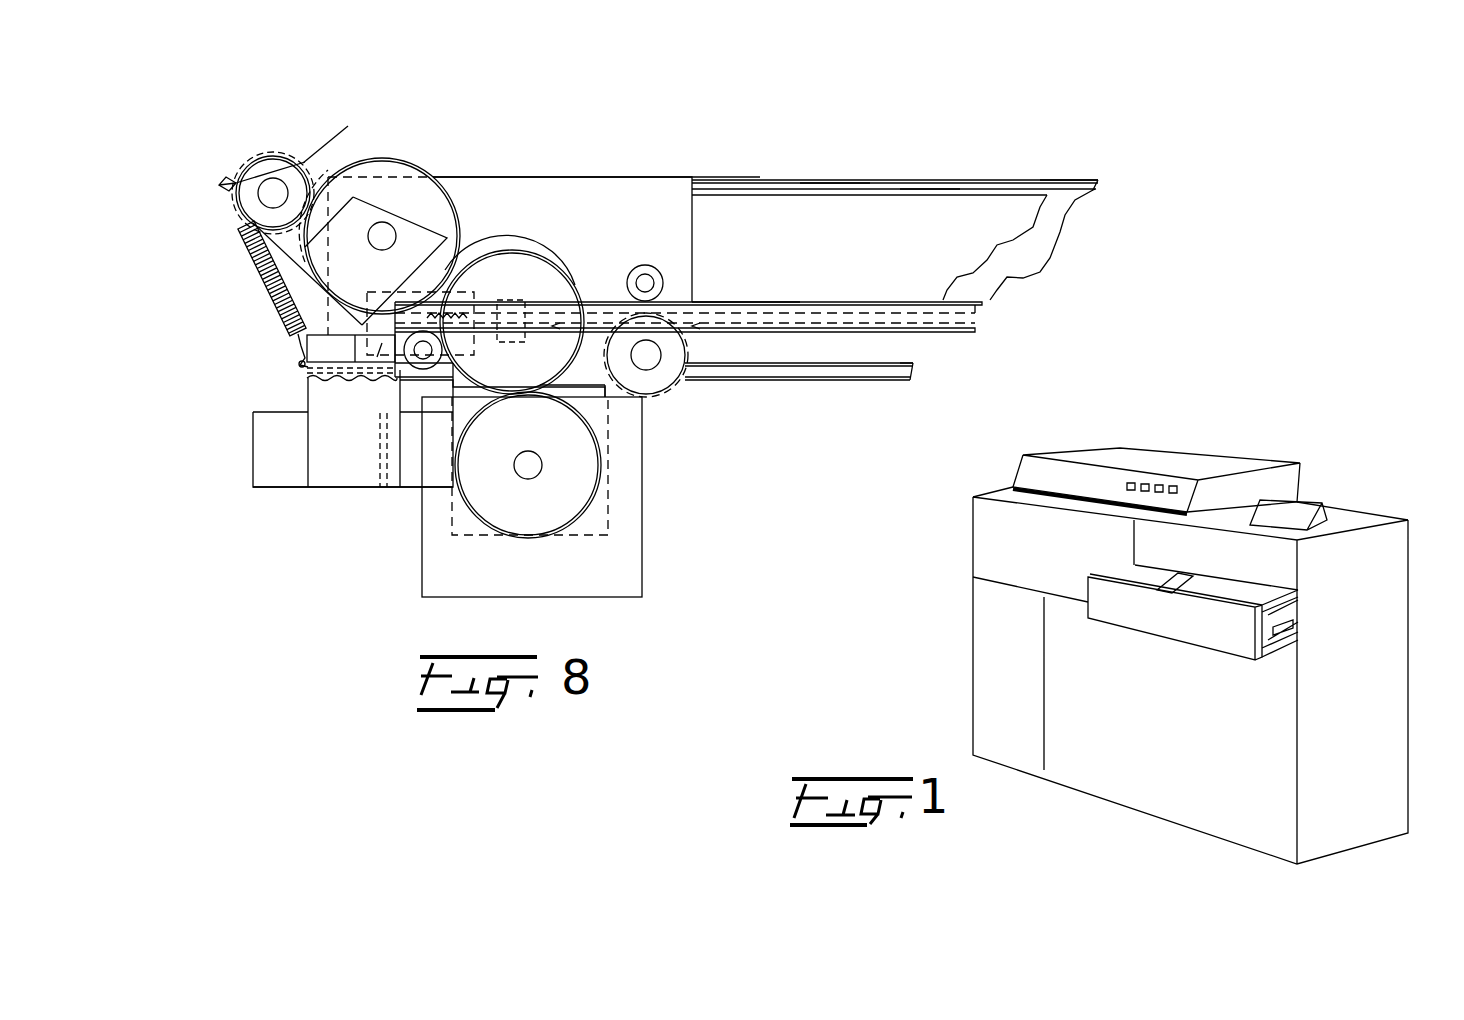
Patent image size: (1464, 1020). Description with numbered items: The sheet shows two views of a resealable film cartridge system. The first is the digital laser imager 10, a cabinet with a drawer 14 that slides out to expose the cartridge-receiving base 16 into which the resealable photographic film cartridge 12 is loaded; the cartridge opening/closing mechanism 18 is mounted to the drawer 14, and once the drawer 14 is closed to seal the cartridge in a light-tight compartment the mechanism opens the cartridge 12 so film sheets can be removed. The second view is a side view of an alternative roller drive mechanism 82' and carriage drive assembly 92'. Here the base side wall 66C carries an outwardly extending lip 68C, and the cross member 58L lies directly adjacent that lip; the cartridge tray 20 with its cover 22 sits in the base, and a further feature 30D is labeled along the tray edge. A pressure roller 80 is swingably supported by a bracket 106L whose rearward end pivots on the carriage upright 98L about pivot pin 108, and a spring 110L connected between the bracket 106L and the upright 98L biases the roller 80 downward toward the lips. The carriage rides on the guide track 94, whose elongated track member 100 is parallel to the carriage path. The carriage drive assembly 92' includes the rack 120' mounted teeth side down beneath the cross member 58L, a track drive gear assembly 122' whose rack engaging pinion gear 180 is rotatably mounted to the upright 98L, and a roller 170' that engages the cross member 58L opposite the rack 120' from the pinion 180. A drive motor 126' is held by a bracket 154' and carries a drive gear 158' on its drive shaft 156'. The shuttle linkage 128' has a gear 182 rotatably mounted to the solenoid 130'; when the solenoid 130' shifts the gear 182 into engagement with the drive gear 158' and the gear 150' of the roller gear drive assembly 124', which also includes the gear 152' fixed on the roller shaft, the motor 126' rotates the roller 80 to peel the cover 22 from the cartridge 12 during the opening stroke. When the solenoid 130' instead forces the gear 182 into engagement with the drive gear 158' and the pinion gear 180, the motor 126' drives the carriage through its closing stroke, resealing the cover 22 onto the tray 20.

In FIG. 1, the digital laser imager 10 is at (1358, 437).
In FIG. 8, the resealable photographic film cartridge 12 is at (768, 176).
In FIG. 1, the resealable photographic film cartridge 12 is at (1258, 591).
In FIG. 1, the drawer 14 is at (1202, 637).
In FIG. 8, the cartridge-receiving base 16 is at (722, 218).
In FIG. 1, the cartridge-receiving base 16 is at (1262, 627).
In FIG. 8, the cartridge opening/closing mechanism 18 is at (211, 150).
In FIG. 1, the cartridge opening/closing mechanism 18 is at (1168, 571).
In FIG. 8, the cartridge tray 20 is at (1064, 205).
In FIG. 8, the cover 22 is at (1050, 180).
In FIG. 8, the guide rail 30D is at (927, 180).
In FIG. 8, the cross member 58L is at (360, 327).
In FIG. 8, the side wall 66C is at (858, 277).
In FIG. 8, the lip 68C is at (833, 180).
In FIG. 8, the pressure roller 80 is at (289, 156).
In FIG. 8, the roller drive mechanism 82' is at (264, 177).
In FIG. 8, the carriage drive assembly 92' is at (353, 575).
In FIG. 8, the guide track 94 is at (913, 371).
In FIG. 8, the carriage upright 98L is at (562, 187).
In FIG. 8, the track member 100 is at (792, 381).
In FIG. 8, the bracket 106L is at (218, 184).
In FIG. 8, the pivot pin 108 is at (390, 224).
In FIG. 8, the spring 110L is at (255, 258).
In FIG. 8, the rack 120' is at (735, 333).
In FIG. 8, the track drive gear assembly 122' is at (701, 433).
In FIG. 8, the roller gear drive assembly 124' is at (562, 164).
In FIG. 8, the drive motor 126' is at (555, 392).
In FIG. 8, the shuttle linkage 128' is at (512, 305).
In FIG. 8, the solenoid 130' is at (382, 374).
In FIG. 8, the gear 150' is at (382, 217).
In FIG. 8, the gear 152' is at (316, 143).
In FIG. 8, the bracket 154' is at (498, 514).
In FIG. 8, the drive shaft 156' is at (615, 506).
In FIG. 8, the drive gear 158' is at (583, 465).
In FIG. 8, the roller 170' is at (651, 259).
In FIG. 8, the rack engaging pinion gear 180 is at (668, 372).
In FIG. 8, the gear 182 is at (553, 290).